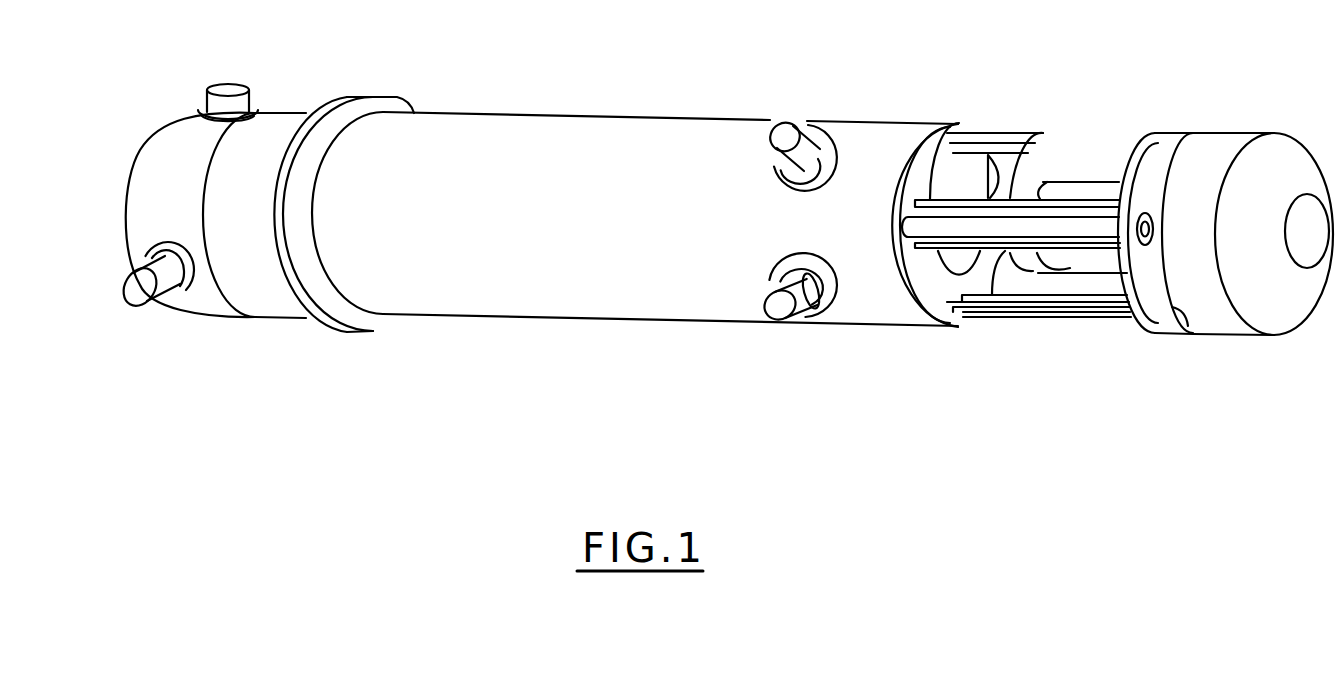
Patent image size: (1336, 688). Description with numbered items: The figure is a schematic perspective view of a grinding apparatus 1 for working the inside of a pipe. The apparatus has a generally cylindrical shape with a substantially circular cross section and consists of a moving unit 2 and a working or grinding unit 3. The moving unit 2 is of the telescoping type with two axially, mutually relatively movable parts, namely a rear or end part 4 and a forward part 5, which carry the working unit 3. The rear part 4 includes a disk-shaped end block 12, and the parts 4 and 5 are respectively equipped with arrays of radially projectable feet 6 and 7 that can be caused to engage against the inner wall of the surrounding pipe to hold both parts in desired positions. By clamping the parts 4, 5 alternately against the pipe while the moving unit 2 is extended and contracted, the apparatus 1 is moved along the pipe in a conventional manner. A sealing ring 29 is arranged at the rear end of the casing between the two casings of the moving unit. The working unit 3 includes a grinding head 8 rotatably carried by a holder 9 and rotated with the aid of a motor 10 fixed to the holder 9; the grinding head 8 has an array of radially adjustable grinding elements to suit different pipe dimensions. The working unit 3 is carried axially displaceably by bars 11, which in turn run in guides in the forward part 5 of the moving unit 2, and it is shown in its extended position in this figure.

The grinding apparatus 1 is at (620, 90).
The moving unit 2 is at (455, 103).
The working unit 3 is at (1160, 118).
The rear or end part 4 is at (282, 117).
The forward part 5 is at (707, 132).
The radially projectable feet 6 is at (226, 83).
The radially projectable feet 7 is at (788, 112).
The grinding head 8 is at (1230, 131).
The holder 9 is at (1158, 305).
The motor 10 is at (1075, 190).
The bars 11 is at (952, 222).
The end block 12 is at (147, 163).
The sealing ring 29 is at (364, 100).